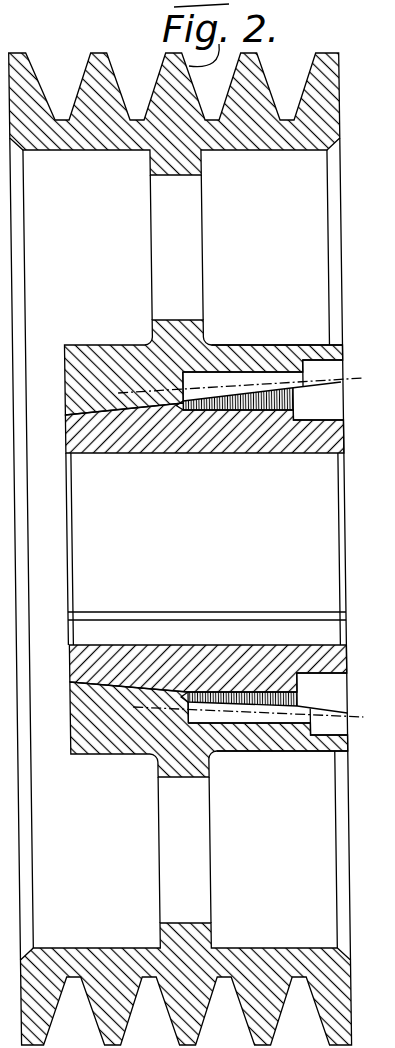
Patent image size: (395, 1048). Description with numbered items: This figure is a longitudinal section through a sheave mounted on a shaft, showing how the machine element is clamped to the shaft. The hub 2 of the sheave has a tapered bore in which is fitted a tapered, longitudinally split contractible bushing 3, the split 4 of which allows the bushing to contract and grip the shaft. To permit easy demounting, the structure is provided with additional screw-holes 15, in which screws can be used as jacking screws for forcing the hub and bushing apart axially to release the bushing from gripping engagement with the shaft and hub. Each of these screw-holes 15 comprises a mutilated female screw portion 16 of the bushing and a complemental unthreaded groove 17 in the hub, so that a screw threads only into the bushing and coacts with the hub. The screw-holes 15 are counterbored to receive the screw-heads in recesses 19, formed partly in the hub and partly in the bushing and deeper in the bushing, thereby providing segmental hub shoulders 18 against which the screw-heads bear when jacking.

The hub 2 is at (73, 352).
The tapered longitudinally split contractible bushing 3 is at (212, 437).
The split 4 is at (199, 618).
The additional screw-holes 15 is at (237, 372).
The mutilated female screw portions 16 is at (265, 412).
The unthreaded grooves 17 is at (192, 385).
The hub shoulders 18 is at (287, 352).
The recesses 19 is at (288, 392).